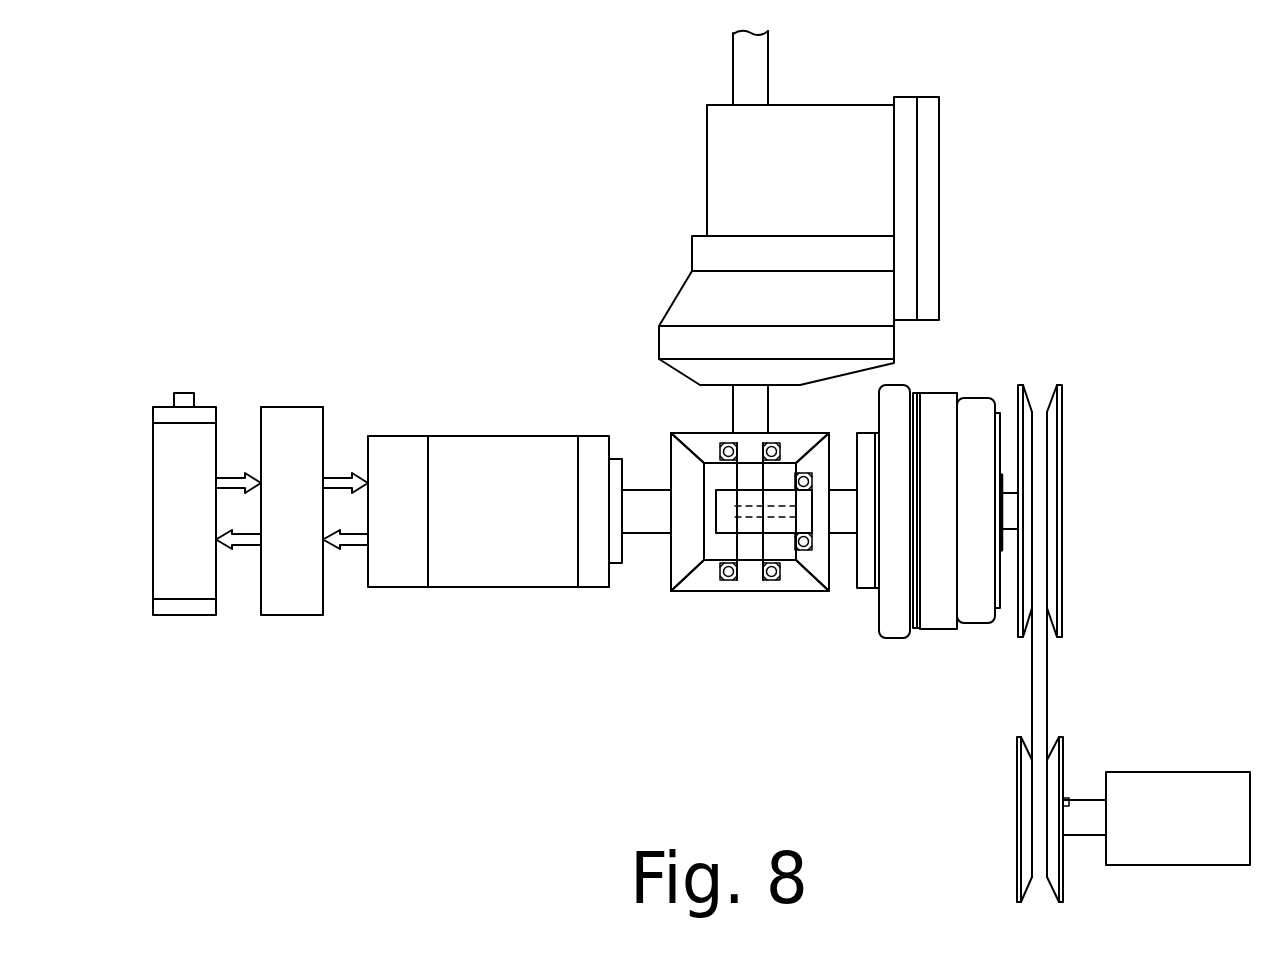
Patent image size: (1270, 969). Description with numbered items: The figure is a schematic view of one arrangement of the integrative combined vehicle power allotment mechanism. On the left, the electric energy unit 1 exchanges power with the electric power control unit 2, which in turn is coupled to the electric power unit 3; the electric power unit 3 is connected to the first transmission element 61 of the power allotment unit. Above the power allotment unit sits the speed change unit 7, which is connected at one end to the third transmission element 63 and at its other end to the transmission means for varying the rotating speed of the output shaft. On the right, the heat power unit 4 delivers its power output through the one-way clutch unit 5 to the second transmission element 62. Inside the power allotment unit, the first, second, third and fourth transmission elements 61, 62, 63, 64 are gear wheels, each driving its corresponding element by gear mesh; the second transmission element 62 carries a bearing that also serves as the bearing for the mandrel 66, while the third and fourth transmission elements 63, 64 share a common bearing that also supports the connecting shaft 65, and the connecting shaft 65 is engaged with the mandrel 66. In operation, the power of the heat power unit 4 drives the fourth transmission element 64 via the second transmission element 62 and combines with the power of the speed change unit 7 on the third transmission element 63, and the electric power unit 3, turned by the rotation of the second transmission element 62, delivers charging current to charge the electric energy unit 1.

The electric energy unit 1 is at (190, 585).
The electric power control unit 2 is at (287, 565).
The electric power unit 3 is at (497, 547).
The heat power unit 4 is at (1170, 788).
The one-way clutch unit 5 is at (942, 605).
The speed change unit 7 is at (743, 170).
The first transmission element 61 is at (685, 543).
The second transmission element 62 is at (820, 560).
The third transmission element 63 is at (693, 438).
The fourth transmission element 64 is at (708, 583).
The connecting shaft 65 is at (749, 552).
The mandrel 66 is at (775, 518).